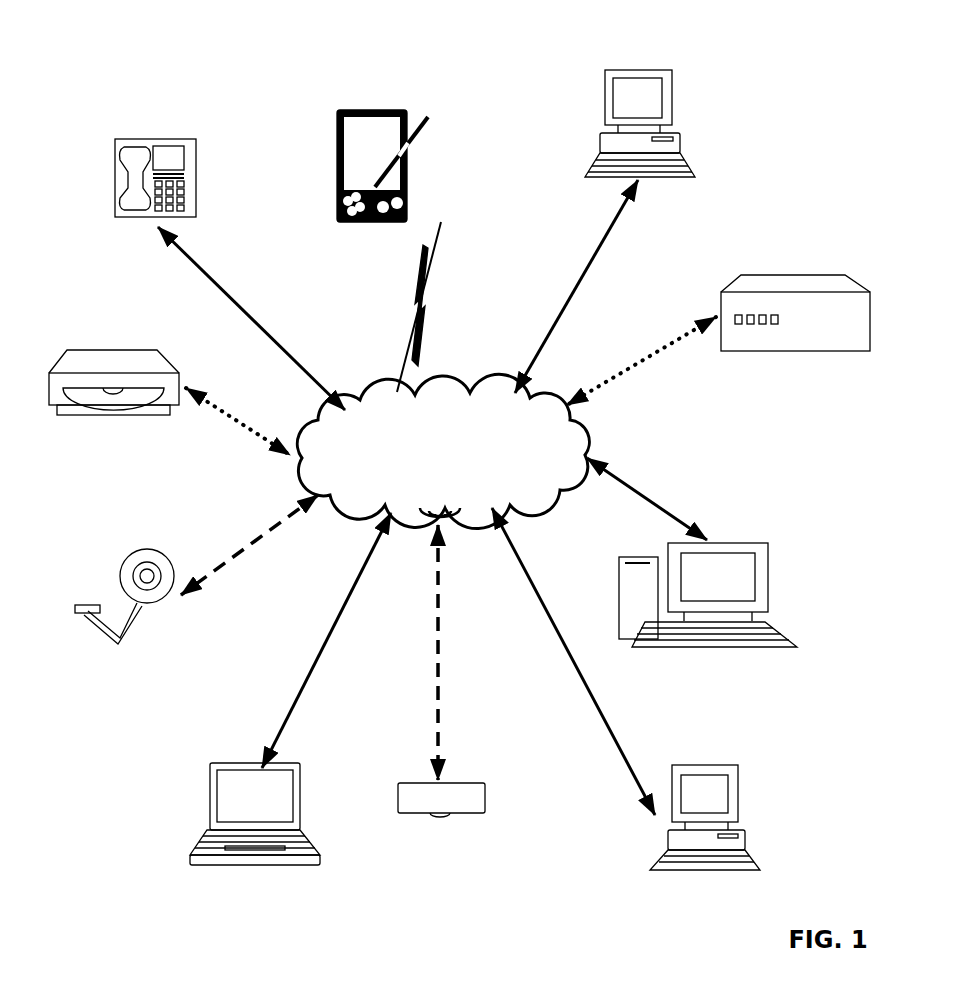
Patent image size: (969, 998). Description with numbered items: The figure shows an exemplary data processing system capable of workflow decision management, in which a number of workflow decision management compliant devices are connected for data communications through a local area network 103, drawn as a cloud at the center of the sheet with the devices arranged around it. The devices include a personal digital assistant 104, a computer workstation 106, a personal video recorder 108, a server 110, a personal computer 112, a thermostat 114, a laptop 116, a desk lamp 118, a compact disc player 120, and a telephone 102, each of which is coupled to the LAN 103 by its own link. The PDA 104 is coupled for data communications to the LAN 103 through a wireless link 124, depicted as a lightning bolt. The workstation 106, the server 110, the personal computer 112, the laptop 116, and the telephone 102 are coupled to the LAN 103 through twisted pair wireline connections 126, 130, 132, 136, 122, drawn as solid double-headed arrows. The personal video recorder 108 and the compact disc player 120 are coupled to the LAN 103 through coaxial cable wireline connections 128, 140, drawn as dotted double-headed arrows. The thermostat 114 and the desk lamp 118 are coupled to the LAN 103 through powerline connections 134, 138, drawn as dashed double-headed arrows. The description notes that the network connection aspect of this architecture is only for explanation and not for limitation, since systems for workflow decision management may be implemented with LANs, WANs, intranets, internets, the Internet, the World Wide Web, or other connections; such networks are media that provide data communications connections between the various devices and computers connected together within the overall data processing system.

The telephone 102 is at (137, 117).
The local area network 103 is at (487, 462).
The personal digital assistant 104 is at (466, 204).
The computer workstation 106 is at (629, 60).
The personal video recorder 108 is at (772, 422).
The server 110 is at (692, 714).
The personal computer 112 is at (685, 957).
The thermostat 114 is at (432, 880).
The laptop 116 is at (239, 926).
The desk lamp 118 is at (110, 697).
The compact disc player 120 is at (110, 486).
The twisted pair wireline connection 122 is at (234, 302).
The wireless link 124 is at (429, 281).
The twisted pair wireline connection 126 is at (602, 274).
The coaxial cable wireline connection 128 is at (639, 399).
The twisted pair wireline connection 130 is at (587, 519).
The twisted pair wireline connection 132 is at (517, 657).
The powerline connection 134 is at (397, 668).
The twisted pair wireline connection 136 is at (289, 621).
The powerline connection 138 is at (220, 524).
The coaxial cable wireline connection 140 is at (232, 407).